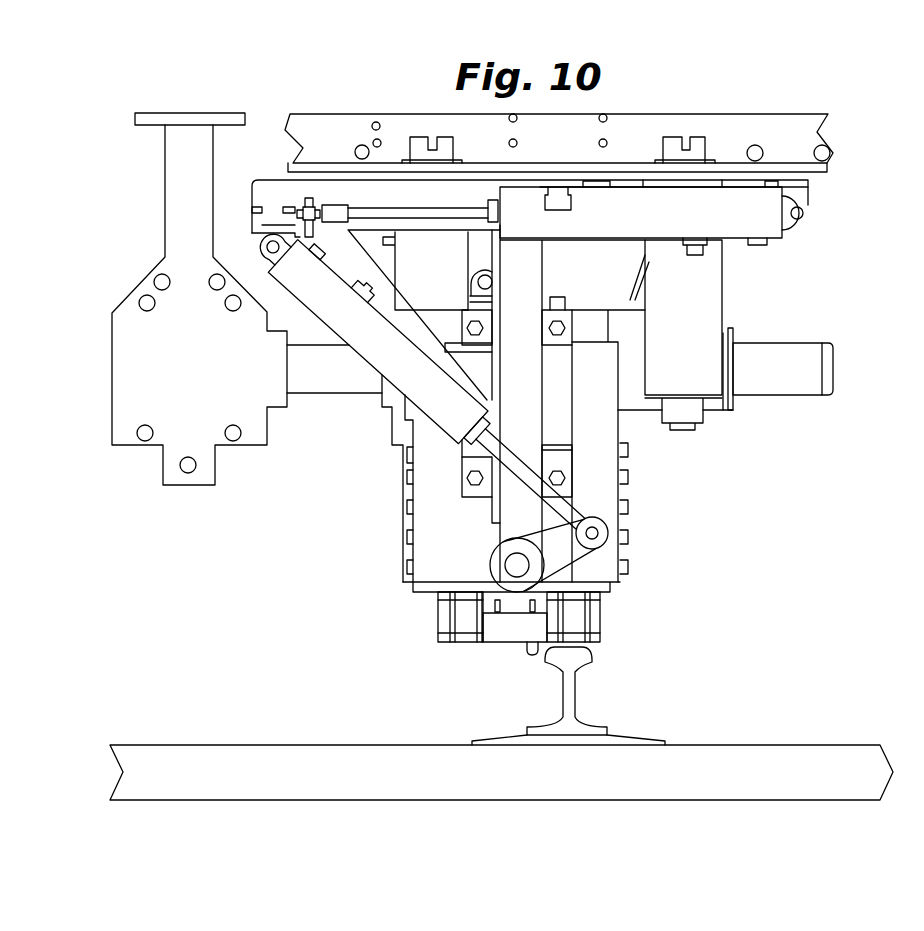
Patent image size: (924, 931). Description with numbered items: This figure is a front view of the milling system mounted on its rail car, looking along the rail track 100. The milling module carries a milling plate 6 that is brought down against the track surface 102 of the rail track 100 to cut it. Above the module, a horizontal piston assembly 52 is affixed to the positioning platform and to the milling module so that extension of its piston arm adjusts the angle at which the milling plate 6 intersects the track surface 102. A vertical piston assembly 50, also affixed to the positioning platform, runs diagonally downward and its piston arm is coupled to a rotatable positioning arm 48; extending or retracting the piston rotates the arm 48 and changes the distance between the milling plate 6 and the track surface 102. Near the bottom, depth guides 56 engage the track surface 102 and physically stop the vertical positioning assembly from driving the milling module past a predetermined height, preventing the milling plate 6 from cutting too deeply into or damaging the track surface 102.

The milling plate 6 is at (500, 637).
The rotatable positioning arm 48 is at (585, 543).
The vertical piston assembly 50 is at (387, 357).
The horizontal piston assembly 52 is at (718, 218).
The depth guide 56 is at (443, 637).
The rail track 100 is at (577, 697).
The track surface 102 is at (537, 652).